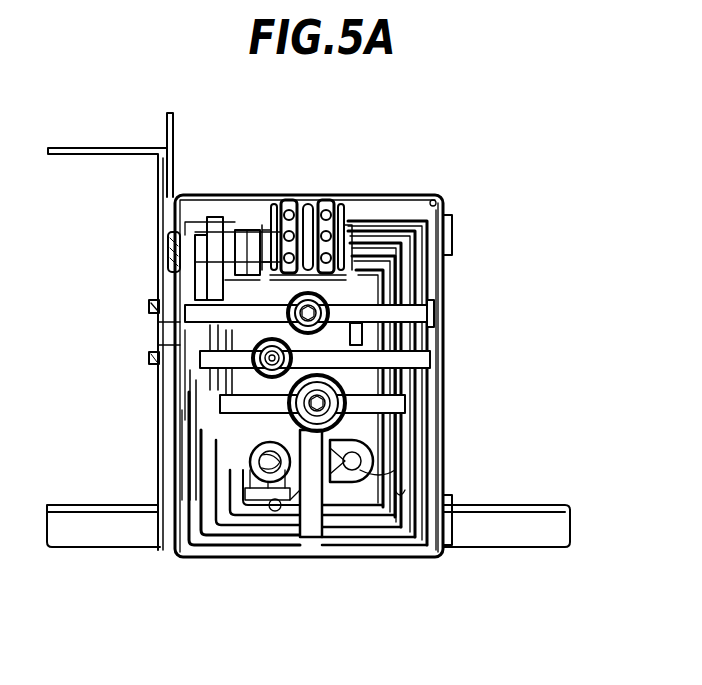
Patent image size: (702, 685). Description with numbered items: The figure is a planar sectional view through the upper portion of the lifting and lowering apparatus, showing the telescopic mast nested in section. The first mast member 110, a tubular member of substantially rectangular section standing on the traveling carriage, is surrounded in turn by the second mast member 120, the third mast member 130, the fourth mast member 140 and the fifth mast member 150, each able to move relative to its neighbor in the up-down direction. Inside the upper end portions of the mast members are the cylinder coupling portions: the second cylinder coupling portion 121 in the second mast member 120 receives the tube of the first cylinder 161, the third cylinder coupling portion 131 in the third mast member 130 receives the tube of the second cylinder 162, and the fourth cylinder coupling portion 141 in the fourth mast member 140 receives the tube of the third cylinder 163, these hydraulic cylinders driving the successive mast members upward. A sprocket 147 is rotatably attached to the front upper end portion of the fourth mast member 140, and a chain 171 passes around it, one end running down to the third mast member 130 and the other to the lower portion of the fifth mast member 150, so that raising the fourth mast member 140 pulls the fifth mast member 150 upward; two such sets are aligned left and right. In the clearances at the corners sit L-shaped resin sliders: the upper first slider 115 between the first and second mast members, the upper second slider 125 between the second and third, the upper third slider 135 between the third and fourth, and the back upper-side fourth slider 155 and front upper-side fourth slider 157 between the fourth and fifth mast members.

The first mast member 110 is at (390, 452).
The upper first slider 115 is at (345, 520).
The second mast member 120 is at (405, 430).
The second cylinder coupling portion 121 is at (215, 400).
The upper second slider 125 is at (360, 517).
The third mast member 130 is at (420, 400).
The third cylinder coupling portion 131 is at (215, 368).
The upper third slider 135 is at (400, 540).
The fourth mast member 140 is at (430, 382).
The fourth cylinder coupling portion 141 is at (160, 302).
The sprocket 147 is at (274, 202).
The fifth mast member 150 is at (440, 345).
The back upper-side fourth slider 155 is at (417, 545).
The front upper-side fourth slider 157 is at (415, 195).
The first cylinder 161 is at (190, 445).
The second cylinder 162 is at (165, 337).
The third cylinder 163 is at (178, 264).
The chain 171 is at (289, 200).